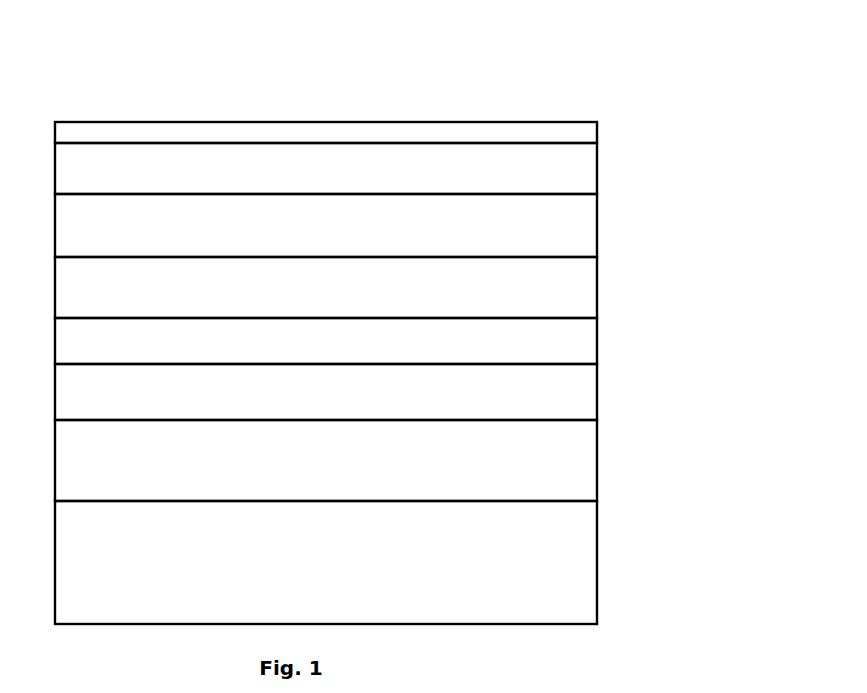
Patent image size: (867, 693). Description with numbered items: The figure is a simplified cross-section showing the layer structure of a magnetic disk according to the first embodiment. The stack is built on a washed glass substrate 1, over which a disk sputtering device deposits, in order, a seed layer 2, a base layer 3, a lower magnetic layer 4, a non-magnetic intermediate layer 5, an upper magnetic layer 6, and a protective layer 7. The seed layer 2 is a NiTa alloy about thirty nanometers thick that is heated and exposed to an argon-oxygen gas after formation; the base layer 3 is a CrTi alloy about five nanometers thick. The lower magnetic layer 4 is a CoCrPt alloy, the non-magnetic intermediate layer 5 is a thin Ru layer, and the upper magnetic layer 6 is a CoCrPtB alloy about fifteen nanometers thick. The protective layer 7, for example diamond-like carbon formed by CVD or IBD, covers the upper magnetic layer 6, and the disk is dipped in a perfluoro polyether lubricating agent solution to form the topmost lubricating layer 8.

The glass substrate 1 is at (577, 569).
The seed layer 2 is at (565, 462).
The base layer 3 is at (572, 392).
The lower magnetic layer 4 is at (572, 339).
The non-magnetic intermediate layer 5 is at (572, 294).
The upper magnetic layer 6 is at (585, 218).
The protective layer 7 is at (573, 165).
The lubricating layer 8 is at (573, 133).